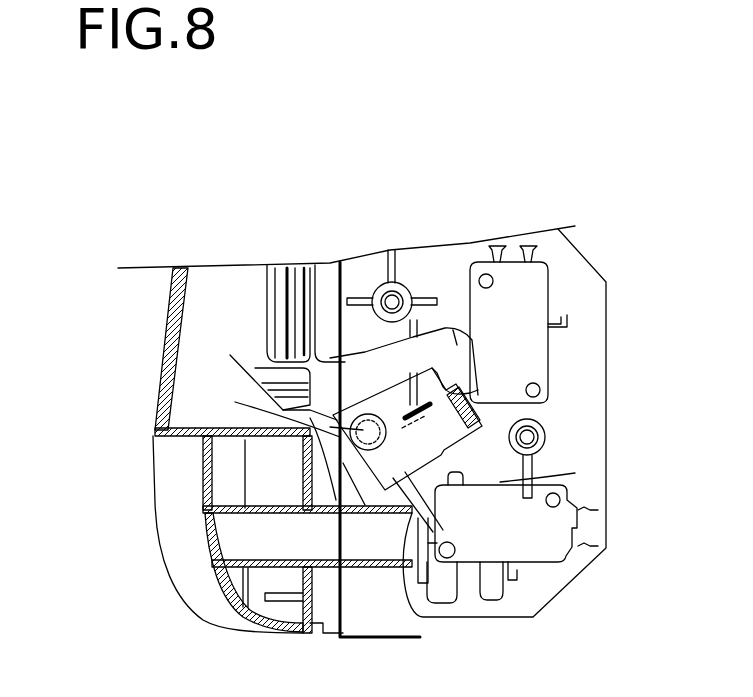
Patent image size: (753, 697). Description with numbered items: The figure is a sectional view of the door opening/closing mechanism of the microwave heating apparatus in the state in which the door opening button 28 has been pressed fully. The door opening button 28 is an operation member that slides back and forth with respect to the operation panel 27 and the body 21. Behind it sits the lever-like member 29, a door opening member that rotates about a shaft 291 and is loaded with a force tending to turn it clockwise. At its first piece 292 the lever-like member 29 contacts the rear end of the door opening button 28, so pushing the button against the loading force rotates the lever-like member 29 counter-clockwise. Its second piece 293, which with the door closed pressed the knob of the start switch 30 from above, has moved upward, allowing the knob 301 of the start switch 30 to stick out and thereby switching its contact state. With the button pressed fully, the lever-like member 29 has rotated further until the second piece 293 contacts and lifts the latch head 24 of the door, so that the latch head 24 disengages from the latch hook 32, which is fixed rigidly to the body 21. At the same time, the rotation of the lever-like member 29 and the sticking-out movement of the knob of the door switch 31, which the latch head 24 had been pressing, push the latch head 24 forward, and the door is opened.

The body 21 is at (160, 362).
The latch head 24 is at (457, 345).
The operation panel 27 is at (312, 431).
The door opening button 28 is at (223, 593).
The lever-like member 29 is at (433, 427).
The start switch 30 is at (547, 563).
The door switch 31 is at (530, 352).
The latch hook 32 is at (413, 415).
The shaft 291 is at (330, 455).
The first piece 292 is at (413, 513).
The second piece 293 is at (497, 420).
The knob 301 is at (500, 482).